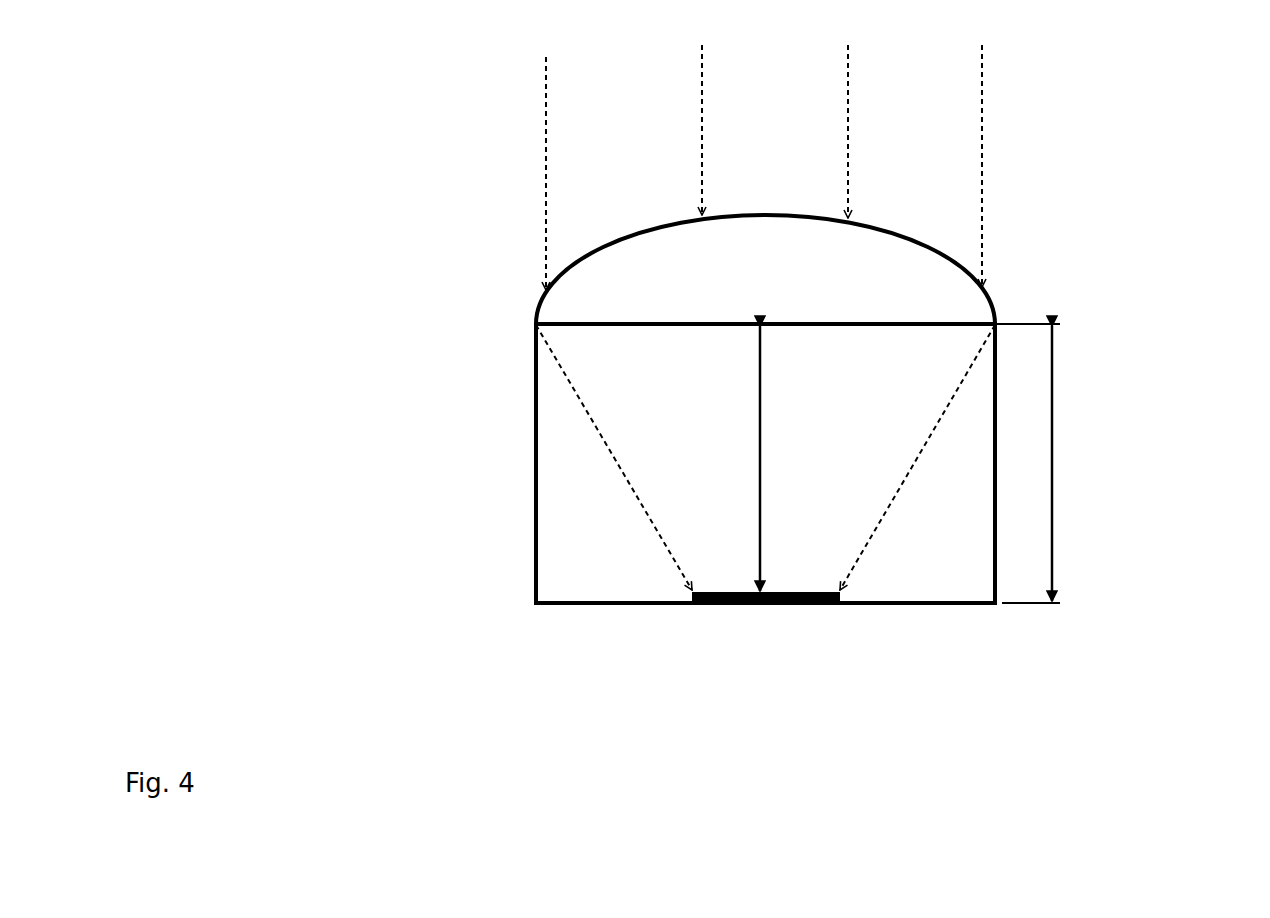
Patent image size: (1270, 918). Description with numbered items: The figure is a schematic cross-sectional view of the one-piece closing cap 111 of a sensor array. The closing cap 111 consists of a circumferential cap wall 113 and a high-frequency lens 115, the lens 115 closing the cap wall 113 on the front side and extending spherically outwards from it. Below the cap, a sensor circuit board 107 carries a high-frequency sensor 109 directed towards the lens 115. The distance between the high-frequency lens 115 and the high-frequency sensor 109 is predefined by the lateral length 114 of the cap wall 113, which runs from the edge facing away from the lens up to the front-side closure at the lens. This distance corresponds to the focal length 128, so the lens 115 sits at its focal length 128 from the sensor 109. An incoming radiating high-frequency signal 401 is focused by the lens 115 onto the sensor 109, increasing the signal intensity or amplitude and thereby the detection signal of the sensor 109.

The sensor circuit board 107 is at (648, 605).
The high-frequency sensor 109 is at (800, 605).
The one-piece closing cap 111 is at (412, 367).
The circumferential cap wall 113 is at (534, 392).
The lateral length 114 is at (1053, 474).
The high-frequency lens 115 is at (965, 300).
The focal length 128 is at (590, 527).
The high-frequency signal 401 is at (546, 127).